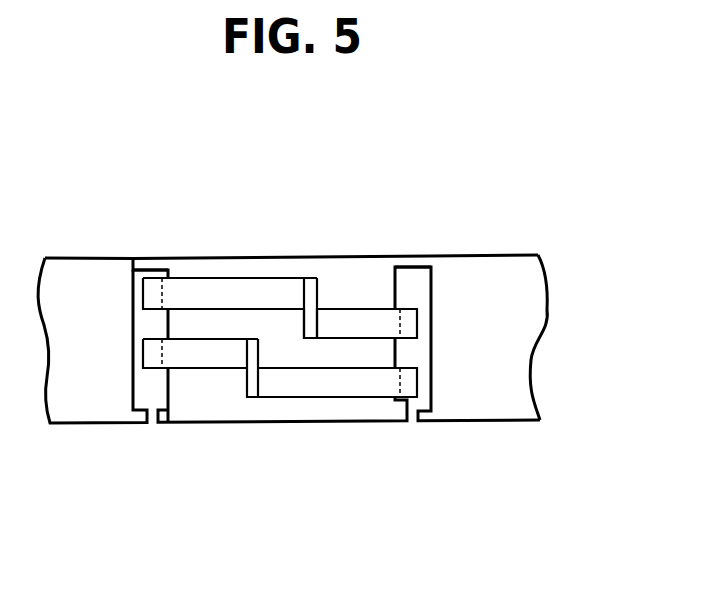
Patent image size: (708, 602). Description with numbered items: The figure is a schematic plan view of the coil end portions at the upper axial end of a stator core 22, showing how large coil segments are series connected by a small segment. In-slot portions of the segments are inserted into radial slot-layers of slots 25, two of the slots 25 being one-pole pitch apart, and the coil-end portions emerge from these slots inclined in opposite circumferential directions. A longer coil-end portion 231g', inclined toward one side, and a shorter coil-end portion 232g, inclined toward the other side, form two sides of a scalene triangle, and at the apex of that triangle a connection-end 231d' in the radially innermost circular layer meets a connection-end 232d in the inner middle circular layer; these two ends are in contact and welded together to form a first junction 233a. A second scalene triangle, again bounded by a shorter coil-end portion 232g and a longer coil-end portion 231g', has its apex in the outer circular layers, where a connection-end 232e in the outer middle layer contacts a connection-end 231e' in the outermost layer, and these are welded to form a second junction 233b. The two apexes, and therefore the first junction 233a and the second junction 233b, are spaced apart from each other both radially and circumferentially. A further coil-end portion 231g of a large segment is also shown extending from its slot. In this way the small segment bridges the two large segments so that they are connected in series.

The stator core 22 is at (513, 347).
The slot 25 is at (147, 270).
The longer coil-end portion 231g' is at (224, 243).
The connection-end 231e' is at (319, 246).
The connection-end 232e is at (309, 340).
The shorter coil-end portion 232g is at (407, 308).
The connection-end 231d' is at (204, 420).
The connection-end 232d is at (251, 339).
The coil-end portion 231g is at (360, 435).
The second junction 233b is at (325, 296).
The first junction 233a is at (232, 385).